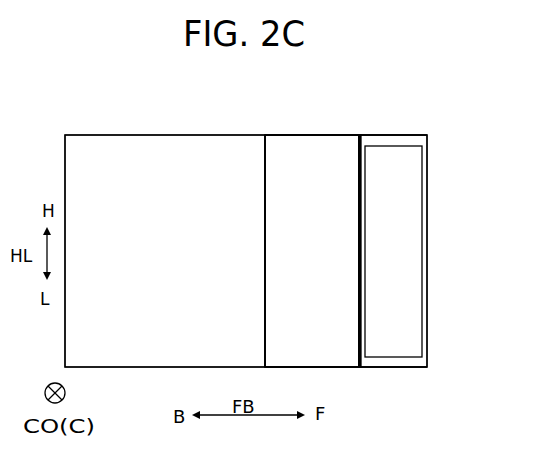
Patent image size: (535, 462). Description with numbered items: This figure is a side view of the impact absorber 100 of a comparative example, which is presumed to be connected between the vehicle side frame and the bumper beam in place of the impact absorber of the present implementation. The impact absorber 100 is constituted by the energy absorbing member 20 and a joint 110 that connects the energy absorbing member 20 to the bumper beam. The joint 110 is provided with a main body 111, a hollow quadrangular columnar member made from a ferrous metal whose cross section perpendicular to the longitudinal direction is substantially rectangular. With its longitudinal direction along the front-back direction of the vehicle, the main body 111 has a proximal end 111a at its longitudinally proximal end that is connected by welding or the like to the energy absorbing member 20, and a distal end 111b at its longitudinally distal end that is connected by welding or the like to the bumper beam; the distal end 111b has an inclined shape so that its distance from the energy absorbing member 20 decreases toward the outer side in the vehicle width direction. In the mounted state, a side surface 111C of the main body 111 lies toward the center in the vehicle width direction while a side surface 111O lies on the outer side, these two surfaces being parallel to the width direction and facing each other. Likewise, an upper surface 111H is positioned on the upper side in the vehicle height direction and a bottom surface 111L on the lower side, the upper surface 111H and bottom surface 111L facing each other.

The impact absorber 100 is at (65, 119).
The energy absorbing member 20 is at (176, 263).
The joint 110 is at (427, 90).
The main body 111 is at (314, 132).
The proximal end 111a is at (258, 157).
The distal end 111b is at (387, 137).
The upper surface 111H is at (410, 135).
The bottom surface 111L is at (340, 367).
The side surface 111C is at (430, 247).
The side surface 111O is at (342, 257).